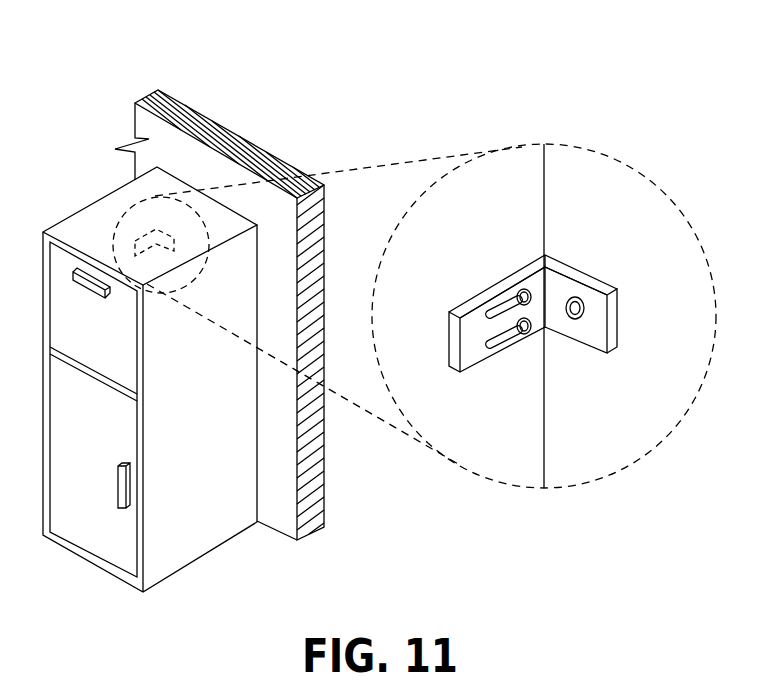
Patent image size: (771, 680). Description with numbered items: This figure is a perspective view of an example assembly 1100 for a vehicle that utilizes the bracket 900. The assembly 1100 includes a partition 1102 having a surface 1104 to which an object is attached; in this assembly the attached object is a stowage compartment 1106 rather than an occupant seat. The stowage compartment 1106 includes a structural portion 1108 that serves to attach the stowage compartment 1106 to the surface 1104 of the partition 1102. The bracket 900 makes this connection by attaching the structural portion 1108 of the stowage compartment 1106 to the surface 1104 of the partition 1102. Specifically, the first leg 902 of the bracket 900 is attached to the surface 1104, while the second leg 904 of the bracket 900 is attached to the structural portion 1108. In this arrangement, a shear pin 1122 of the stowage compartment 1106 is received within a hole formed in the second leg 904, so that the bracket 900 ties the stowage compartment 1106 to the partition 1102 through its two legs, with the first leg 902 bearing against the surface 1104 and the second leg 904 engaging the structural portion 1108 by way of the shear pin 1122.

The assembly 1100 is at (60, 63).
The partition 1102 is at (158, 90).
The surface 1104 is at (158, 151).
The bracket 900 is at (141, 232).
The first leg 902 is at (565, 267).
The second leg 904 is at (516, 340).
The shear pin 1122 is at (477, 340).
The stowage compartment 1106 is at (173, 574).
The structural portion 1108 is at (494, 422).